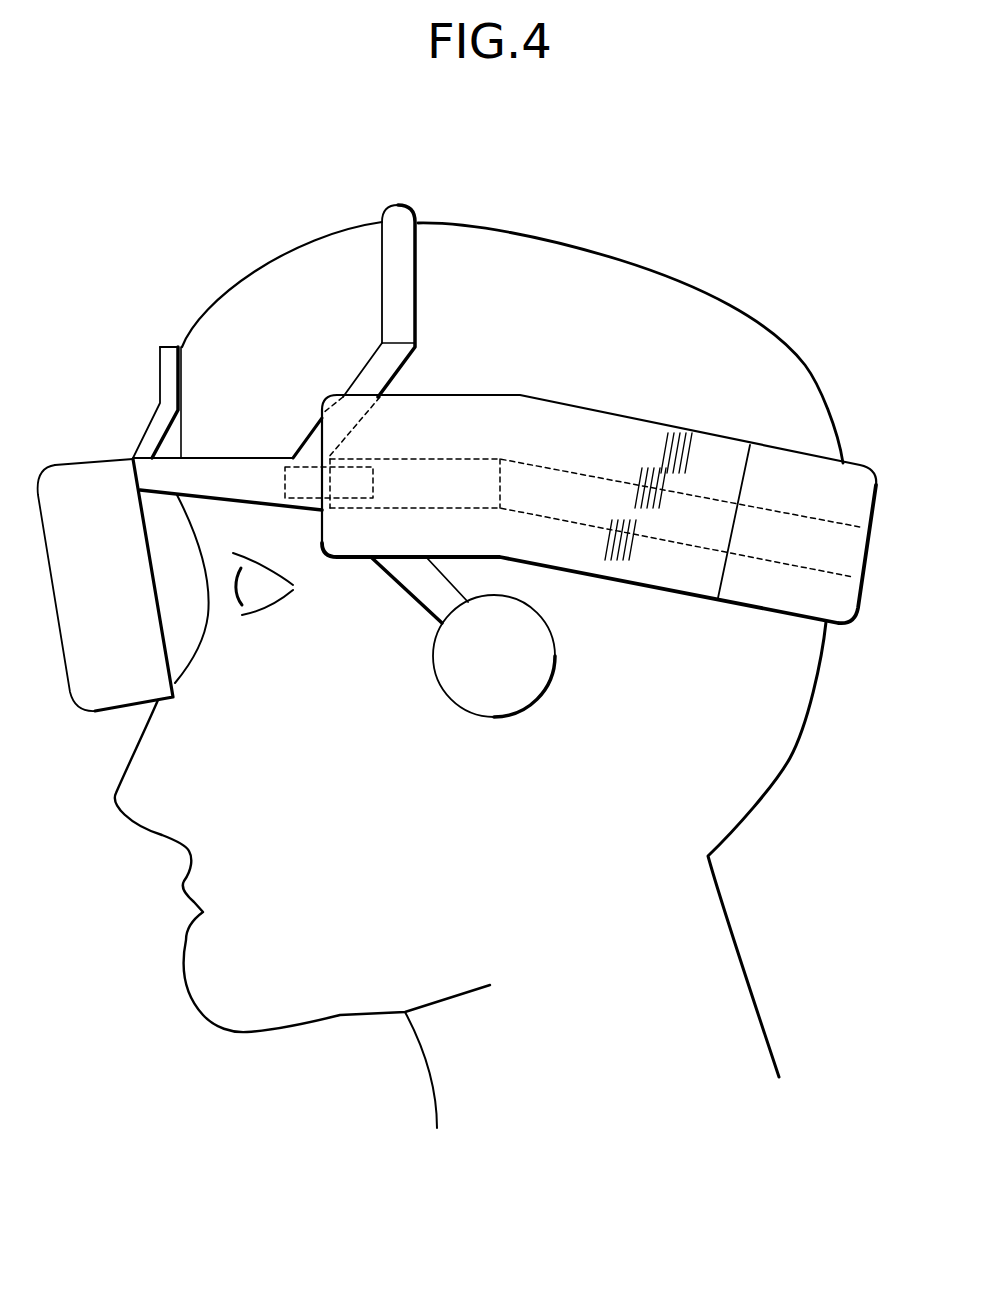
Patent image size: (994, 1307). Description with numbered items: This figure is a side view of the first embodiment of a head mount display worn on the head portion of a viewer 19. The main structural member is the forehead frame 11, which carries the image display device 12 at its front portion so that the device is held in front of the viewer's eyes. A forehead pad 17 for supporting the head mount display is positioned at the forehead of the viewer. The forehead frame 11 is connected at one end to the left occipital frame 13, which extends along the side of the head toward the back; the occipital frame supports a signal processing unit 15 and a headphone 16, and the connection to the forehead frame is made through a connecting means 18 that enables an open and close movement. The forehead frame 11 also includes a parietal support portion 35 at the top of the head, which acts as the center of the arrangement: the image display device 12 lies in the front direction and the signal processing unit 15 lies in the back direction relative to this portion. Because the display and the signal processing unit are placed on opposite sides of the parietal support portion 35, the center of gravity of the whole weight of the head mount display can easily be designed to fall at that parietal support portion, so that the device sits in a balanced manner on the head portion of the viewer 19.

The forehead frame 11 is at (233, 470).
The image display device 12 is at (92, 690).
The left occipital frame 13 is at (627, 480).
The signal processing unit 15 is at (523, 395).
The headphone 16 is at (518, 698).
The forehead pad 17 is at (163, 365).
The connecting means 18 is at (375, 477).
The head portion of a viewer 19 is at (712, 292).
The parietal support portion 35 is at (393, 173).